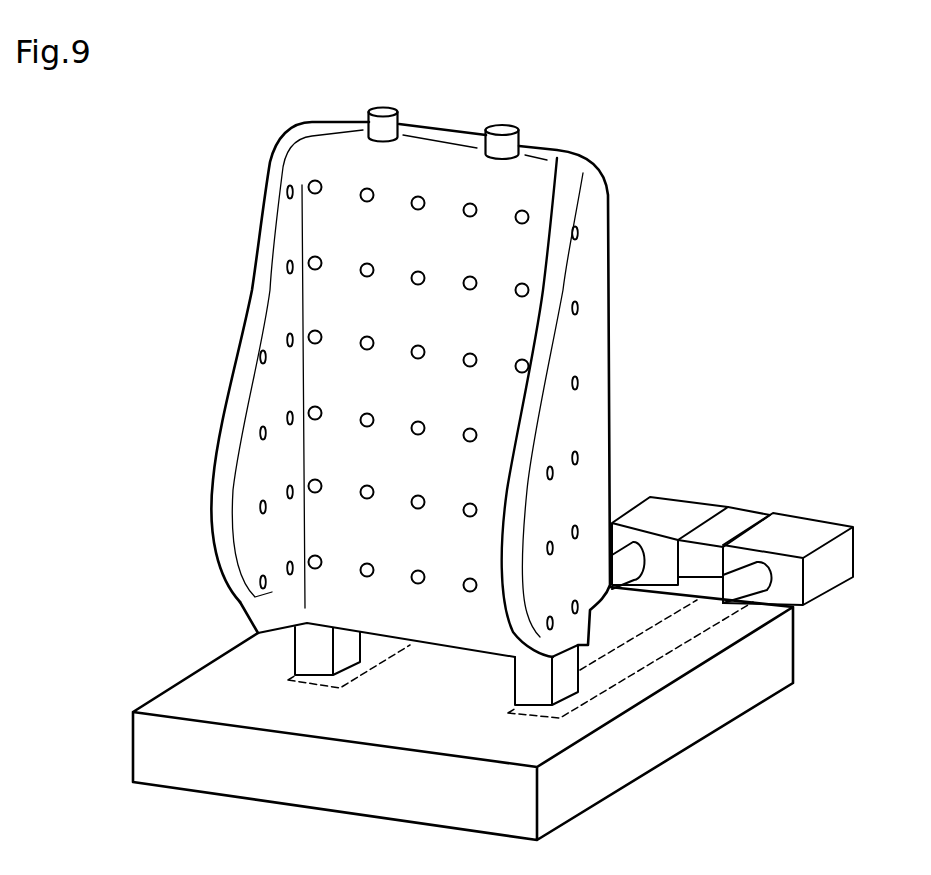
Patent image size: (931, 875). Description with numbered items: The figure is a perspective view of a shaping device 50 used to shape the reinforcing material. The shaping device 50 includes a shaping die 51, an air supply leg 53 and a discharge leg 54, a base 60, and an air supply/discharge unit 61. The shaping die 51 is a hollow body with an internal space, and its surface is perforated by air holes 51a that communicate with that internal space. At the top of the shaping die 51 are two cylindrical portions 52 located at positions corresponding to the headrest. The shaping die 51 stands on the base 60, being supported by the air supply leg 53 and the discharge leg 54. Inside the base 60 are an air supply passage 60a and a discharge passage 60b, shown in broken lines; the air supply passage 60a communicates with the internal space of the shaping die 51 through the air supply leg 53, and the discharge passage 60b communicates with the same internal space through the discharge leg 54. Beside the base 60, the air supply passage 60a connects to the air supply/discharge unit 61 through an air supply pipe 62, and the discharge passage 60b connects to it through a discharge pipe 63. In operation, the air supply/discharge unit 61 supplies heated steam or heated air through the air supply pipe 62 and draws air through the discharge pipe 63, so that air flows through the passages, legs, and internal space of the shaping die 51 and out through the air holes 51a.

The shaping device 50 is at (657, 132).
The shaping die 51 is at (490, 322).
The air holes 51a is at (525, 209).
The cylindrical portions 52 is at (384, 110).
The air supply leg 53 is at (313, 660).
The discharge leg 54 is at (528, 677).
The base 60 is at (248, 773).
The air supply passage 60a is at (392, 662).
The discharge passage 60b is at (560, 718).
The air supply/discharge unit 61 is at (750, 509).
The air supply pipe 62 is at (648, 551).
The discharge pipe 63 is at (767, 573).